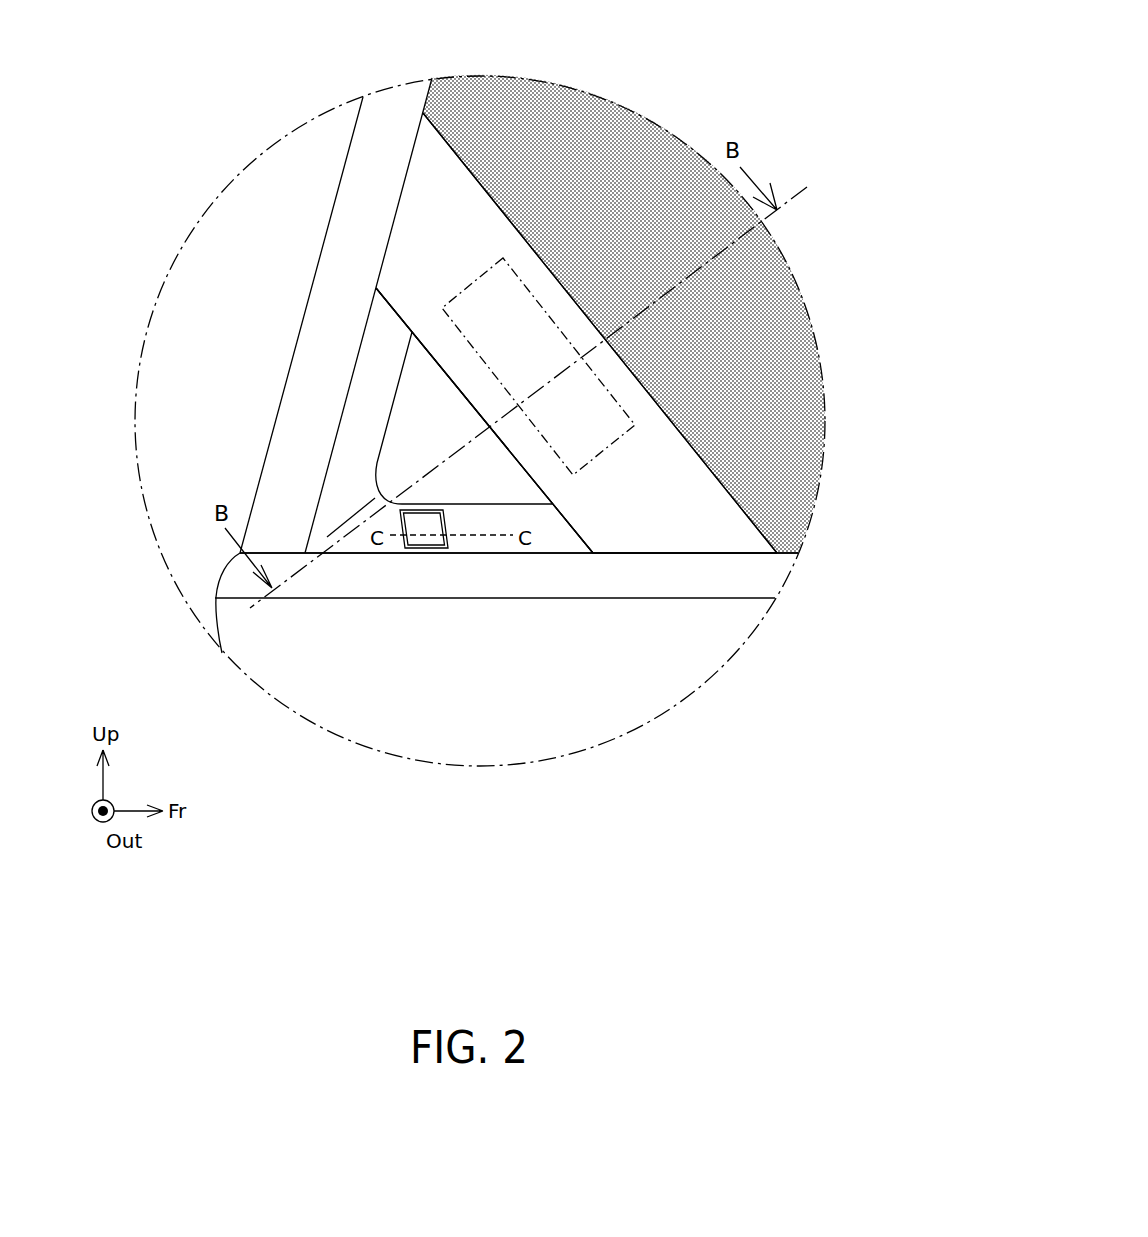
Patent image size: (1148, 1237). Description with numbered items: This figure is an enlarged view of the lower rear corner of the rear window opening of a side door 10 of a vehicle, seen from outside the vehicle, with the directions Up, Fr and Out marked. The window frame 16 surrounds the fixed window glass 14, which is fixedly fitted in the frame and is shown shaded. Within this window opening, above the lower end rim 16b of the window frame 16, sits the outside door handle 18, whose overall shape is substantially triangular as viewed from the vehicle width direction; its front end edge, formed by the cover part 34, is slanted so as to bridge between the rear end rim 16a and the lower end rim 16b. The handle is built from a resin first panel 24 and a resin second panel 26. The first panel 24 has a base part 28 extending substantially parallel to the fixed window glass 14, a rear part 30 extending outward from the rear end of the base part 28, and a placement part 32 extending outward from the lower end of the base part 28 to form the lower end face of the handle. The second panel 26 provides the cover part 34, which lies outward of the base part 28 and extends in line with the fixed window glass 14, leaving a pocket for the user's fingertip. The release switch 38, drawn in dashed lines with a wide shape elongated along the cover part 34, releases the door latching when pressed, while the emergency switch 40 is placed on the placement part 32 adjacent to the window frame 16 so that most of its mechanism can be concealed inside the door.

The side door 10 is at (528, 740).
The fixed window glass 14 is at (782, 360).
The window frame 16 is at (492, 363).
The rear end rim 16a is at (372, 148).
The lower end rim 16b is at (505, 583).
The outside door handle 18 is at (640, 570).
The first panel 24 is at (351, 434).
The second panel 26 is at (624, 414).
The base part 28 is at (413, 418).
The rear part 30 is at (367, 365).
The placement part 32 is at (573, 543).
The cover part 34 is at (675, 522).
The release switch 38 is at (523, 280).
The emergency switch 40 is at (441, 552).